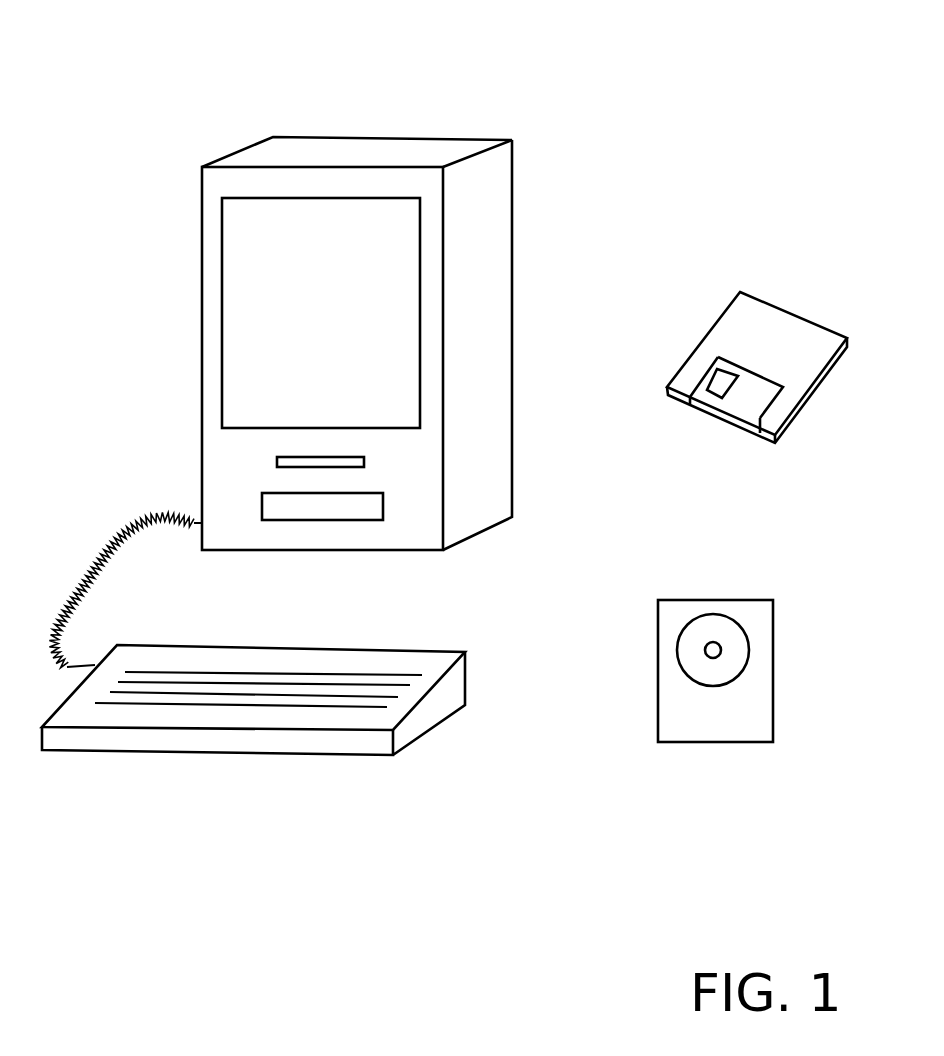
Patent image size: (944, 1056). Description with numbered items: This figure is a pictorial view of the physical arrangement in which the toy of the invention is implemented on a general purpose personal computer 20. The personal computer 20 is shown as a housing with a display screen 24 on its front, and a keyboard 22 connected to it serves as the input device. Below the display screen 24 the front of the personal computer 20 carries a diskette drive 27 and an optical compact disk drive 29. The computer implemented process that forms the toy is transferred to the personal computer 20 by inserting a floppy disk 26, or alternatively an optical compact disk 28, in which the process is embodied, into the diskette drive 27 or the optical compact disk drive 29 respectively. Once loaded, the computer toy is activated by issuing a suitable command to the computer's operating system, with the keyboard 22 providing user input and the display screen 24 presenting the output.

The personal computer 20 is at (375, 153).
The keyboard 22 is at (110, 717).
The display screen 24 is at (247, 298).
The floppy disk 26 is at (772, 328).
The diskette drive 27 is at (325, 463).
The optical compact disk 28 is at (758, 660).
The optical compact disk drive 29 is at (318, 508).